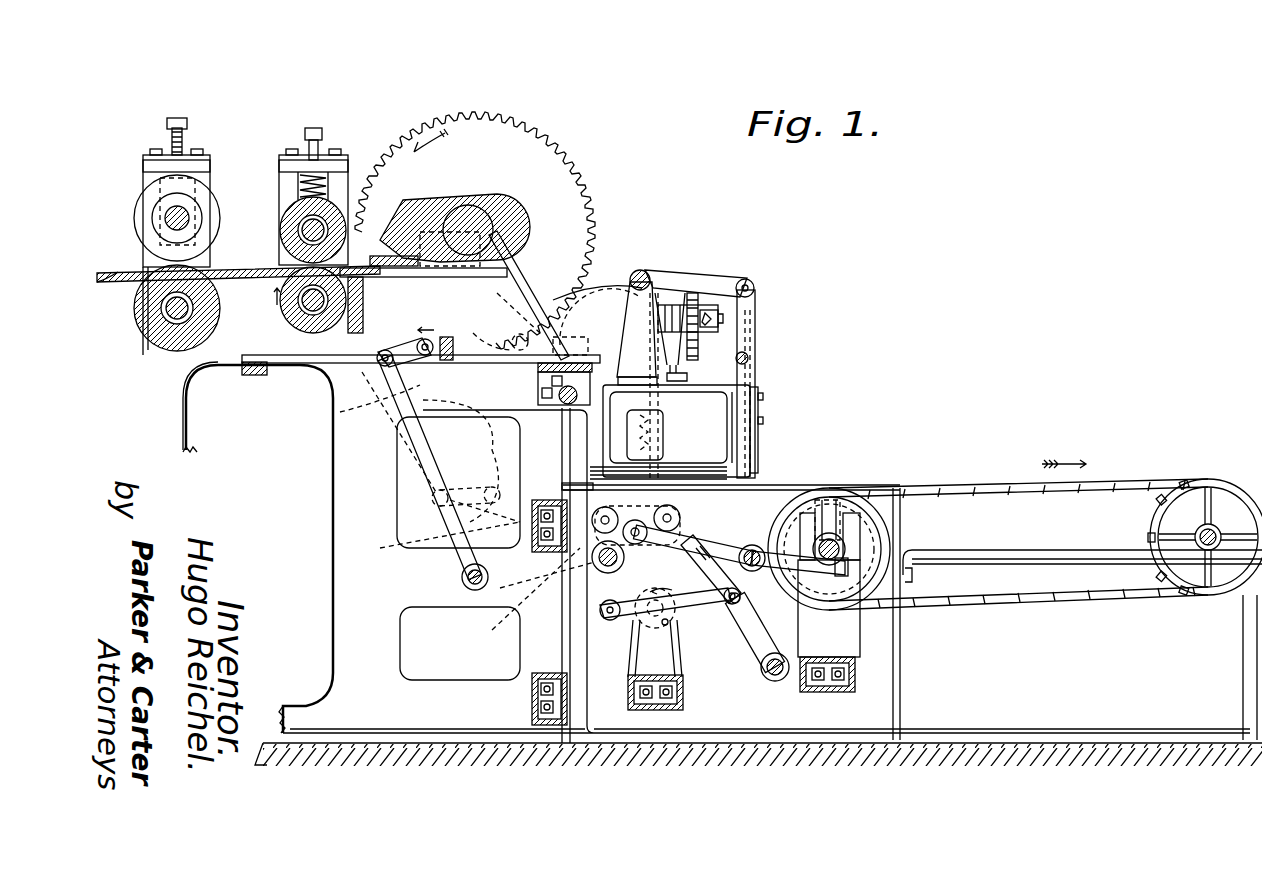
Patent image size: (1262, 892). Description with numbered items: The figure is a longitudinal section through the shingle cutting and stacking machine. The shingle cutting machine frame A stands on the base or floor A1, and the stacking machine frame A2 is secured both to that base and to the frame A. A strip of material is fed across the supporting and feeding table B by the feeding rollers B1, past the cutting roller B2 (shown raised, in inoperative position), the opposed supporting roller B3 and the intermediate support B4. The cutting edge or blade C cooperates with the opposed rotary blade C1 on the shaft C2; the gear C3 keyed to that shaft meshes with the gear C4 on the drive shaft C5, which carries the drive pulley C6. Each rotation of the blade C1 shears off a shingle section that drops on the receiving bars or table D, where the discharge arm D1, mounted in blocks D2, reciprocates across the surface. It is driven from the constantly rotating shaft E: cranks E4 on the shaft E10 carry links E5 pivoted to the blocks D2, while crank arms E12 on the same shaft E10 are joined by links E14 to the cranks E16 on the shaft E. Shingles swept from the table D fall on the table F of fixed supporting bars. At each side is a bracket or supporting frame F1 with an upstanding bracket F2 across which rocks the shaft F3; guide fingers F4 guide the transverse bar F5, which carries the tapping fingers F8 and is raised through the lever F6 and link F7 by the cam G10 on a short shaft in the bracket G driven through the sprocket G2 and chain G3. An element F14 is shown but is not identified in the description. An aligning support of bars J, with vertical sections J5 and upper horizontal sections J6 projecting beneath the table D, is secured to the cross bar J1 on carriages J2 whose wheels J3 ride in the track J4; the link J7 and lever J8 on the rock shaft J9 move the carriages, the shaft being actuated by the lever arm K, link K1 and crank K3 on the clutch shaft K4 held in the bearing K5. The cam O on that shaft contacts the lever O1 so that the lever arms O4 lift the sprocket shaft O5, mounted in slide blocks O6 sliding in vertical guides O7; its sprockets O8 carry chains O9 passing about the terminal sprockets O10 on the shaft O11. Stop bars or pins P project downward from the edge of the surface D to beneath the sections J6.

The shingle cutting machine frame A is at (553, 240).
The base or floor A1 is at (478, 748).
The stacking machine frame A2 is at (645, 738).
The supporting and feeding table B is at (112, 270).
The feeding rollers B1 is at (282, 225).
The cutting roller B2 is at (150, 200).
The supporting roller B3 is at (150, 318).
The intermediate support B4 is at (266, 286).
The cutting edge or blade C is at (385, 272).
The opposed rotary blade C1 is at (375, 262).
The shaft C2 is at (466, 210).
The gear C3 is at (475, 112).
The gear C4 is at (588, 305).
The drive shaft C5 is at (540, 390).
The drive pulley C6 is at (602, 292).
The receiving bars or table D is at (462, 366).
The discharge arm D1 is at (433, 342).
The blocks D2 is at (446, 336).
The shaft E is at (595, 565).
The cranks E4 is at (430, 496).
The links E5 is at (400, 345).
The shaft E10 is at (462, 580).
The crank arms E12 is at (382, 546).
The links E14 is at (475, 490).
The cranks E16 is at (498, 625).
The table or surface F is at (818, 482).
The bracket or supporting frame F1 is at (750, 452).
The upstanding bracket F2 is at (636, 276).
The shaft F3 is at (652, 288).
The guide fingers F4 is at (738, 342).
The transverse bar F5 is at (748, 357).
The lever F6 is at (748, 275).
The link F7 is at (757, 305).
The tapping fingers F8 is at (755, 410).
The rod F14 is at (756, 384).
The bracket G is at (705, 305).
The sprocket G2 is at (690, 295).
The chain G3 is at (650, 442).
The cam G10 is at (718, 305).
The bars J is at (642, 518).
The cross bar J1 is at (600, 505).
The carriage J2 is at (668, 505).
The wheels J3 is at (748, 552).
The track J4 is at (760, 548).
The vertical section J5 is at (585, 485).
The upper horizontal section J6 is at (440, 415).
The link J7 is at (652, 579).
The lever J8 is at (707, 568).
The rock shaft J9 is at (775, 683).
The lever arm K is at (752, 642).
The link K1 is at (726, 608).
The crank K3 is at (612, 622).
The clutch shaft K4 is at (652, 640).
The bearing K5 is at (685, 692).
The cam O is at (640, 626).
The lever O1 is at (668, 626).
The lever arms O4 is at (850, 568).
The sprocket shaft O5 is at (850, 552).
The slide blocks O6 is at (836, 512).
The vertical guides O7 is at (860, 636).
The sprockets O8 is at (862, 522).
The chains O9 is at (1032, 598).
The terminal sprocket O10 is at (1150, 530).
The shaft O11 is at (1210, 532).
The stop bars or pins P is at (575, 372).